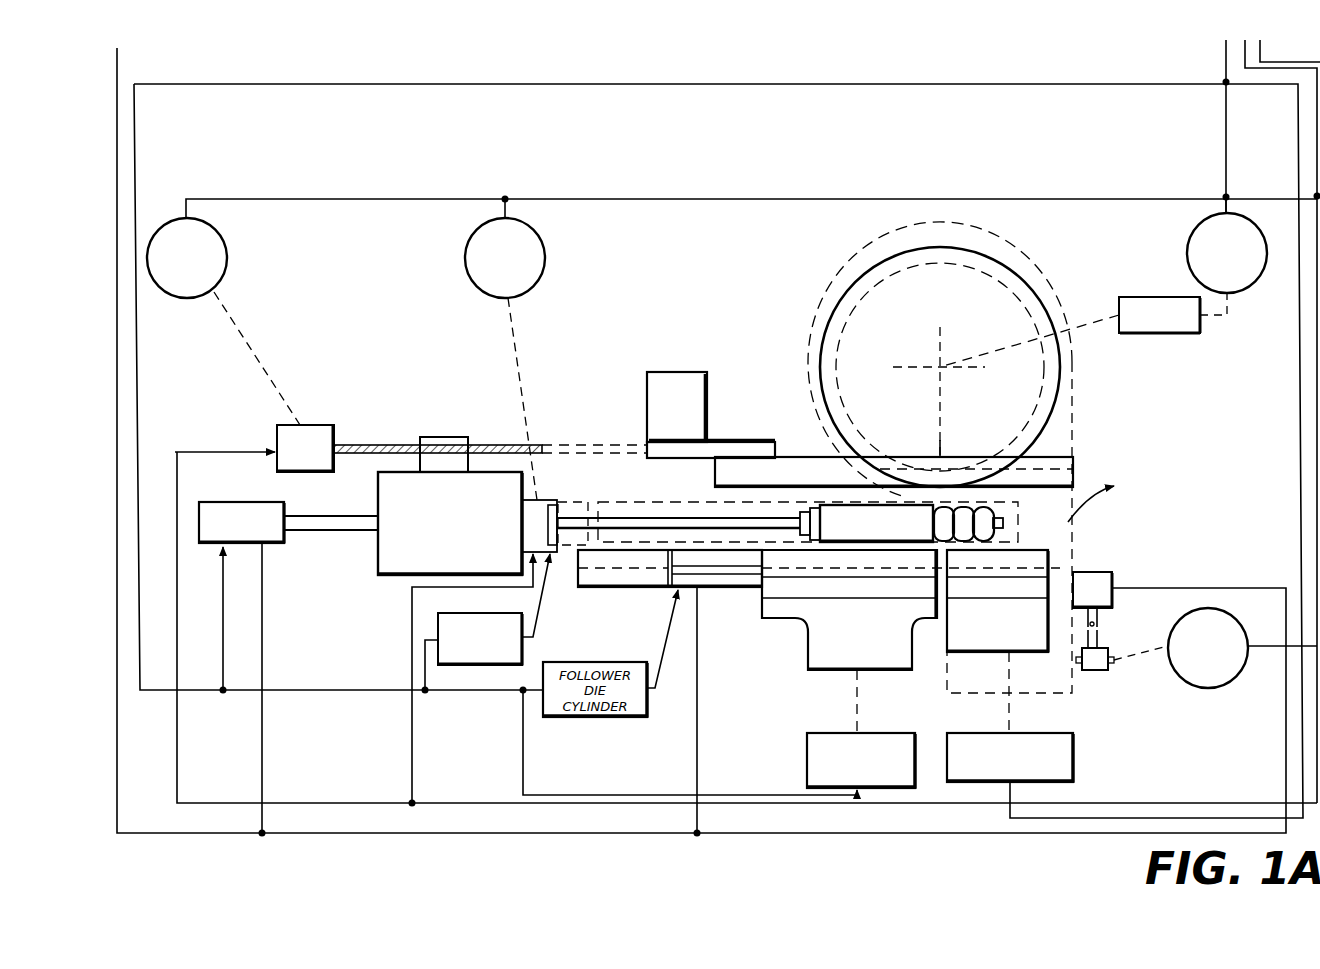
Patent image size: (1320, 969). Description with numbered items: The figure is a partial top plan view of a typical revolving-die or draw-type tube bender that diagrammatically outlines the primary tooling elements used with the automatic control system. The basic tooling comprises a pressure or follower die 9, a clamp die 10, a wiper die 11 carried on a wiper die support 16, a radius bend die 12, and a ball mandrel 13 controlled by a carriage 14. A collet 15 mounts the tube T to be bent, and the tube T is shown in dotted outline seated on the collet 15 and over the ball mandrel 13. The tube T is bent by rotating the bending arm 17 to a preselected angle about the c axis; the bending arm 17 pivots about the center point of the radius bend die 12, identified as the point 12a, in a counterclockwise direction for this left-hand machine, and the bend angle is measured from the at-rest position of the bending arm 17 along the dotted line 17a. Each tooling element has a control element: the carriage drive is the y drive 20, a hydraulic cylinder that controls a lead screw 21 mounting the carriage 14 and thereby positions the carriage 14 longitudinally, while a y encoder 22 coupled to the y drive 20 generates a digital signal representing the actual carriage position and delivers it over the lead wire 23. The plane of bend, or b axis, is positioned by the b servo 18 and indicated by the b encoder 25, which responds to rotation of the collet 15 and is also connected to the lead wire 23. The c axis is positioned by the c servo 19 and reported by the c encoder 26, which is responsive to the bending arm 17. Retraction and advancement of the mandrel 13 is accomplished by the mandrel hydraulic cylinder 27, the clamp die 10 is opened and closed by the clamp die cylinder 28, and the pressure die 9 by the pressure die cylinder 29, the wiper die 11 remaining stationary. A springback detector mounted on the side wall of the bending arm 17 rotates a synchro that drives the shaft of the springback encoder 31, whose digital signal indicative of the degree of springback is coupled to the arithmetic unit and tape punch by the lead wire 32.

The pressure die 9 is at (785, 578).
The clamp die 10 is at (1048, 572).
The wiper die 11 is at (802, 454).
The radius bend die 12 is at (897, 245).
The center point of the radius bend die 12a is at (942, 362).
The ball mandrel 13 is at (1003, 537).
The carriage 14 is at (398, 580).
The collet 15 is at (556, 500).
The wiper die support 16 is at (645, 399).
The bending arm 17 is at (1090, 706).
The dotted line 17a is at (945, 452).
The b positioning servo 18 is at (480, 639).
The c positioning servo 19 is at (1143, 297).
The y drive 20 is at (336, 425).
The lead screw 21 is at (400, 444).
The y encoder 22 is at (222, 232).
The lead wire 23 is at (608, 198).
The b encoder 25 is at (472, 232).
The c encoder 26 is at (1200, 222).
The mandrel hydraulic cylinder 27 is at (237, 500).
The clamp die cylinder 28 is at (1075, 760).
The pressure die cylinder 29 is at (807, 760).
The springback encoder 31 is at (1200, 688).
The lead wire 32 is at (1270, 652).
The tube T is at (1022, 514).